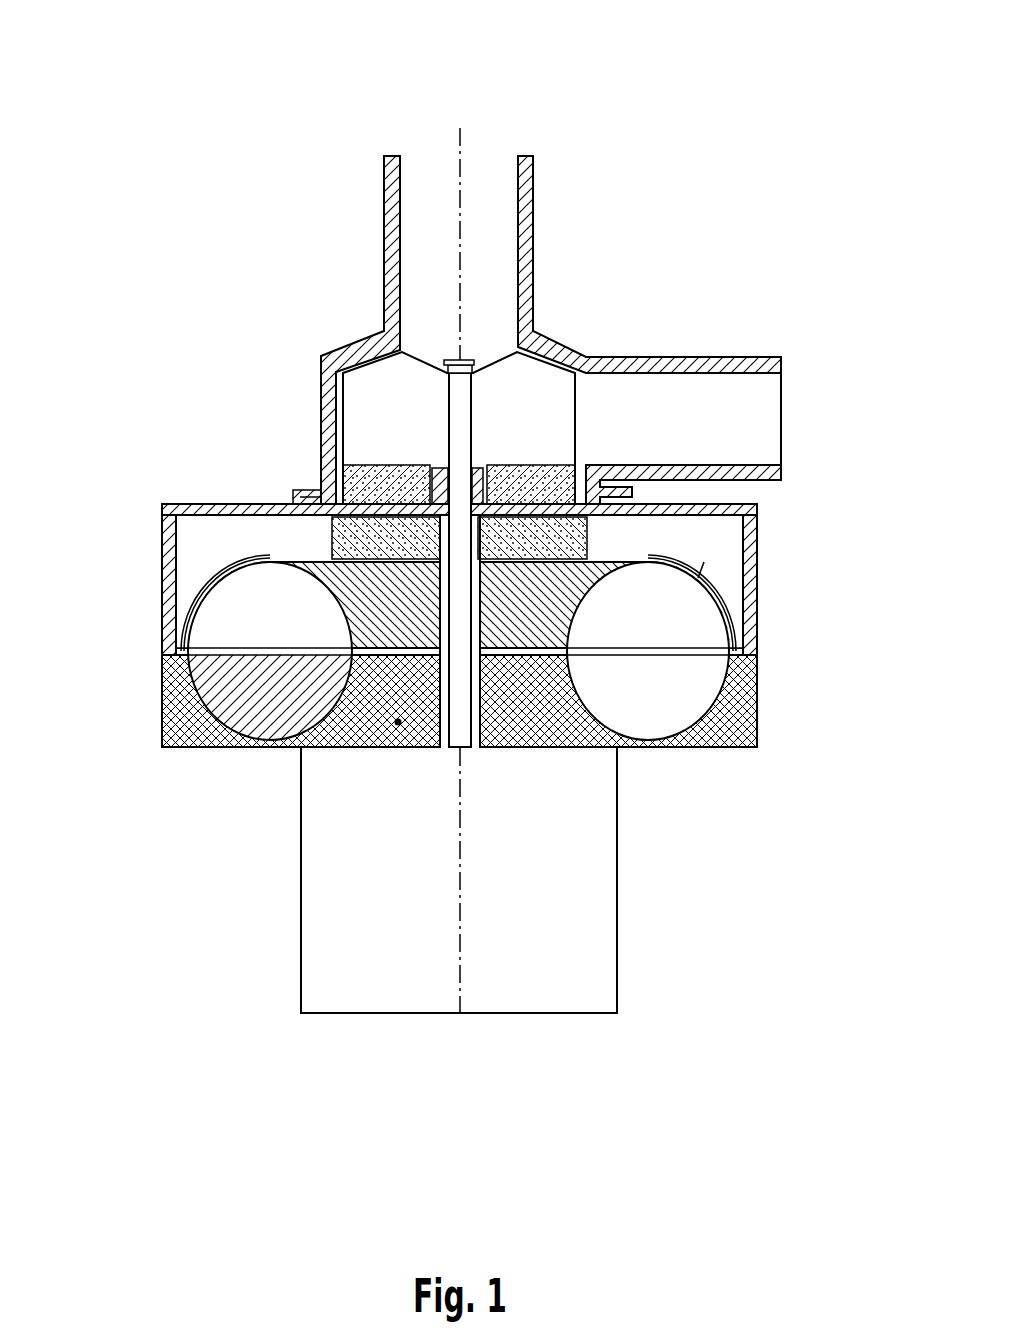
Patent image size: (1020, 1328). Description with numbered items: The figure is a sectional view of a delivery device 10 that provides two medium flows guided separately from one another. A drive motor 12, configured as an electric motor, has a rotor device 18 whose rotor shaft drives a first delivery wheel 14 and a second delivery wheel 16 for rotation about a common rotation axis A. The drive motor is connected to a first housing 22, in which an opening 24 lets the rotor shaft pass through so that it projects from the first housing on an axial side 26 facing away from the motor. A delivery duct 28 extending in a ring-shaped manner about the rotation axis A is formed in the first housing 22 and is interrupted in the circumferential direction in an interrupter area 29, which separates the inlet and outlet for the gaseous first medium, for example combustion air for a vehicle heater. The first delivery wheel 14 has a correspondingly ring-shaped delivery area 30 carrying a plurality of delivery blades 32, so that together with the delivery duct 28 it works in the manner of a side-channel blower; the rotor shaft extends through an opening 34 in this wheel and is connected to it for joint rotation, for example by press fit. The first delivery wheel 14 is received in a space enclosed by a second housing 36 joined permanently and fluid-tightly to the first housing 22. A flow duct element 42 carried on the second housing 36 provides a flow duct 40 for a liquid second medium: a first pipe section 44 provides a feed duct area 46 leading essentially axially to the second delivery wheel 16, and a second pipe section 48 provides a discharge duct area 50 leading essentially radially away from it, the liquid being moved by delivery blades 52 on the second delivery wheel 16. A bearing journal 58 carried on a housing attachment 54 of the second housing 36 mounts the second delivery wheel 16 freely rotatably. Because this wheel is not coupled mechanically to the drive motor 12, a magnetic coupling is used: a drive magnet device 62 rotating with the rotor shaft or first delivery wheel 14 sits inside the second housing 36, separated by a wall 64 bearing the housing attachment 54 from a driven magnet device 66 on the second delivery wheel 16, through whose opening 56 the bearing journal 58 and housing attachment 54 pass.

The delivery device 10 is at (462, 506).
The drive motor 12 is at (618, 903).
The first delivery wheel 14 is at (700, 572).
The second delivery wheel 16 is at (382, 358).
The rotor device 18 is at (396, 723).
The first housing 22 is at (163, 740).
The opening 24 is at (473, 747).
The axial side 26 is at (217, 682).
The delivery duct 28 is at (700, 690).
The interrupter area 29 is at (236, 720).
The delivery area 30 is at (213, 583).
The delivery blades 32 is at (700, 626).
The opening 34 is at (472, 592).
The second housing 36 is at (163, 617).
The flow duct 40 is at (577, 272).
The flow duct element 42 is at (689, 330).
The first pipe section 44 is at (346, 311).
The feed duct area 46 is at (500, 227).
The second pipe section 48 is at (715, 357).
The discharge duct area 50 is at (760, 404).
The delivery blades 52 is at (433, 373).
The housing attachment 54 is at (492, 463).
The opening 56 is at (347, 487).
The bearing journal 58 is at (585, 535).
The drive magnet device 62 is at (588, 527).
The wall 64 is at (242, 504).
The driven magnet device 66 is at (350, 492).
The rotation axis A is at (462, 215).